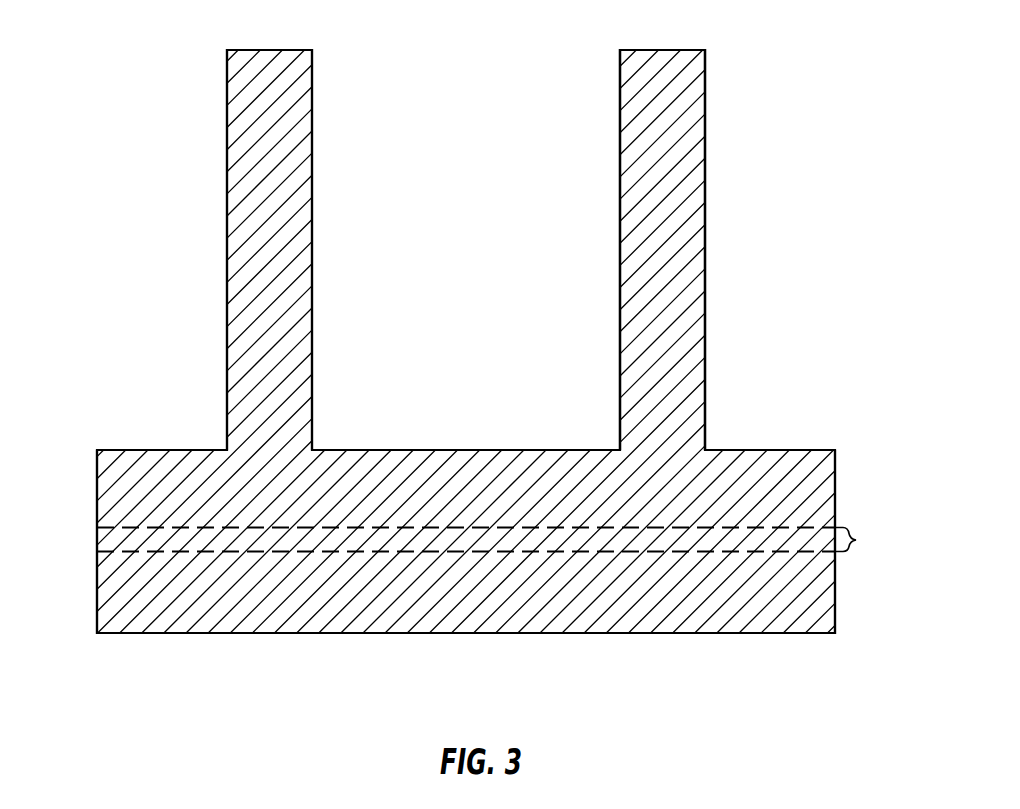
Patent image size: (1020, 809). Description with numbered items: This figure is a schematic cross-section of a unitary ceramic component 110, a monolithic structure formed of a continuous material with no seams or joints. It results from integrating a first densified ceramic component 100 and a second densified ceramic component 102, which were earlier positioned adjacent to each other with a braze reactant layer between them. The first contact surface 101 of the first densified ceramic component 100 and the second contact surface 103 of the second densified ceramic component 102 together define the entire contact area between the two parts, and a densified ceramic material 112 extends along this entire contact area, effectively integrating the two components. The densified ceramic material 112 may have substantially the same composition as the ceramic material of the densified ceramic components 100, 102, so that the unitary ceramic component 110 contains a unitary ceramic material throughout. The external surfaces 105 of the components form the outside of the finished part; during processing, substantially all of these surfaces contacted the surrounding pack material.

The first densified ceramic component 100 is at (683, 225).
The first contact surface 101 is at (340, 527).
The second densified ceramic component 102 is at (642, 620).
The second contact surface 103 is at (440, 552).
The external surfaces 105 is at (313, 215).
The unitary ceramic component 110 is at (93, 157).
The densified ceramic material 112 is at (856, 540).